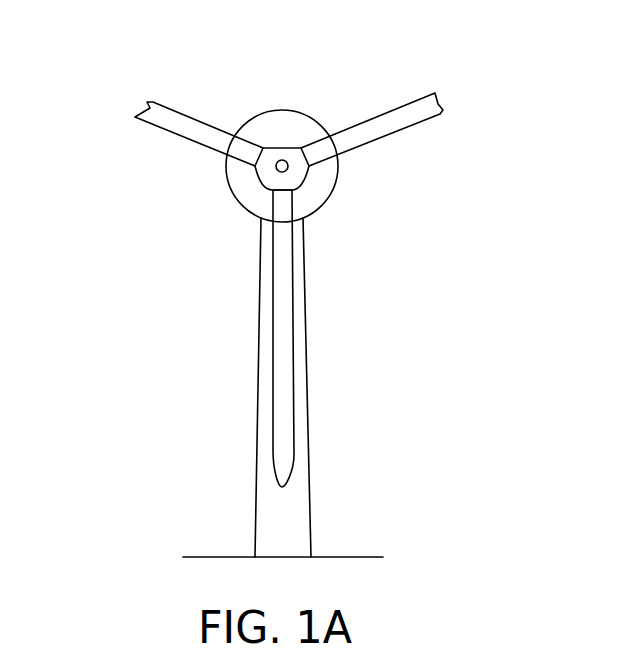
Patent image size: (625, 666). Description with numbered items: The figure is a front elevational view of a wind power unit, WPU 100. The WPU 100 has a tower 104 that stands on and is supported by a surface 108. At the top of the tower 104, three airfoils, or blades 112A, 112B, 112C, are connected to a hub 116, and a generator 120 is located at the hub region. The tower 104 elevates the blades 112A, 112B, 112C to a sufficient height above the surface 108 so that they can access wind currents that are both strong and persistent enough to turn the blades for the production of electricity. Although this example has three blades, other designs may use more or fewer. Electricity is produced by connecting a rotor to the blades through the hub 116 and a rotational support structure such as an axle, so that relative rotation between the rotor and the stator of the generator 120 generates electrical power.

The WPU 100 is at (156, 230).
The tower 104 is at (255, 443).
The surface 108 is at (188, 555).
The blade 112A is at (170, 108).
The blade 112B is at (295, 397).
The blade 112C is at (413, 98).
The hub 116 is at (283, 148).
The generator 120 is at (325, 203).